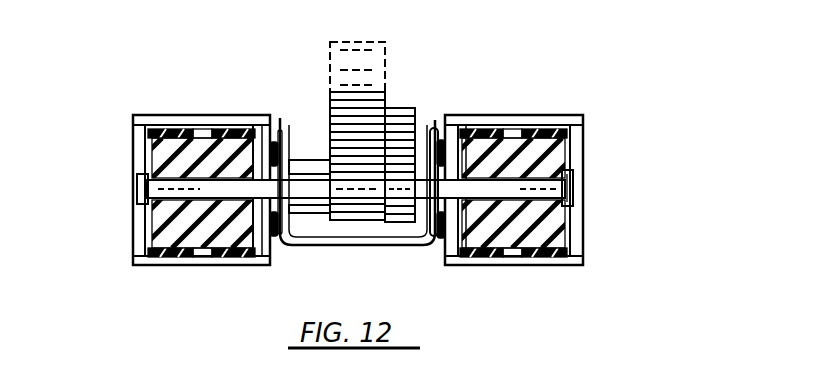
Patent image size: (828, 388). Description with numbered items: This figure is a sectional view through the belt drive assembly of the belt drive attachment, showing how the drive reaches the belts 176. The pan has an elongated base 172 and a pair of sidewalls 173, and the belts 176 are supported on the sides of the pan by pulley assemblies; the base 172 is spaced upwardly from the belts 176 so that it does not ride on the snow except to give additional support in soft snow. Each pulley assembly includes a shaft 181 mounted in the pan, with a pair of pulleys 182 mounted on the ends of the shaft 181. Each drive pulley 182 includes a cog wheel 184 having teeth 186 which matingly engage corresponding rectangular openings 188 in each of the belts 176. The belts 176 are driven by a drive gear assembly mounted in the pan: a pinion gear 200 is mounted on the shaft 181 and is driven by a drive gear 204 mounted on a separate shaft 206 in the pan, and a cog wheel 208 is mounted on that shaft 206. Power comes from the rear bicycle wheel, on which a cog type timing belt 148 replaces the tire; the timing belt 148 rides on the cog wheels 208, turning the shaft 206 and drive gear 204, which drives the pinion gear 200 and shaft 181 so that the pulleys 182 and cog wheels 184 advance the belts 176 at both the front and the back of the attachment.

The cog type timing belt 148 is at (328, 50).
The elongated base 172 is at (300, 248).
The sidewalls 173 is at (272, 142).
The belts 176 is at (140, 250).
The shaft 181 is at (572, 190).
The pulleys 182 is at (150, 160).
The cog wheel 184 is at (155, 220).
The teeth 186 is at (207, 263).
The rectangular openings 188 is at (190, 128).
The pinion gear 200 is at (398, 238).
The drive gear 204 is at (412, 120).
The shaft 206 is at (290, 136).
The cog wheel 208 is at (398, 102).